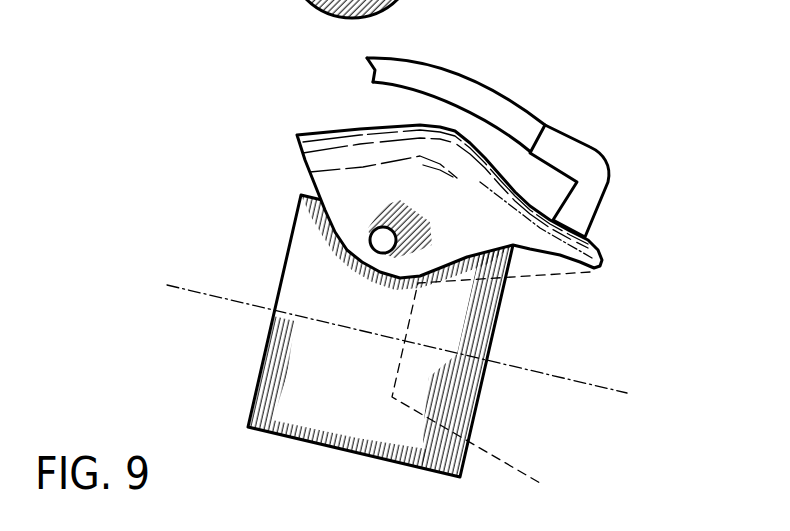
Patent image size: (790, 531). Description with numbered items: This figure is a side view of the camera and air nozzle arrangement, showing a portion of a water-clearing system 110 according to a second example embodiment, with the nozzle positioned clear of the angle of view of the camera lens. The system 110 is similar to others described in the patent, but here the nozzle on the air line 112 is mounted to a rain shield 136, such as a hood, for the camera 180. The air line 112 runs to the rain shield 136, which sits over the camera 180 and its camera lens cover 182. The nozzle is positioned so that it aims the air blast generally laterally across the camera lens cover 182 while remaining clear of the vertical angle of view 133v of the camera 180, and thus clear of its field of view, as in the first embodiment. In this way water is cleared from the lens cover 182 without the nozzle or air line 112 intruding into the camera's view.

The water-clearing system 110 is at (343, 77).
The air line 112 is at (488, 78).
The rain shield 136 is at (323, 126).
The camera 180 is at (239, 0).
The camera lens cover 182 is at (512, 322).
The vertical angle of view 133v is at (528, 452).